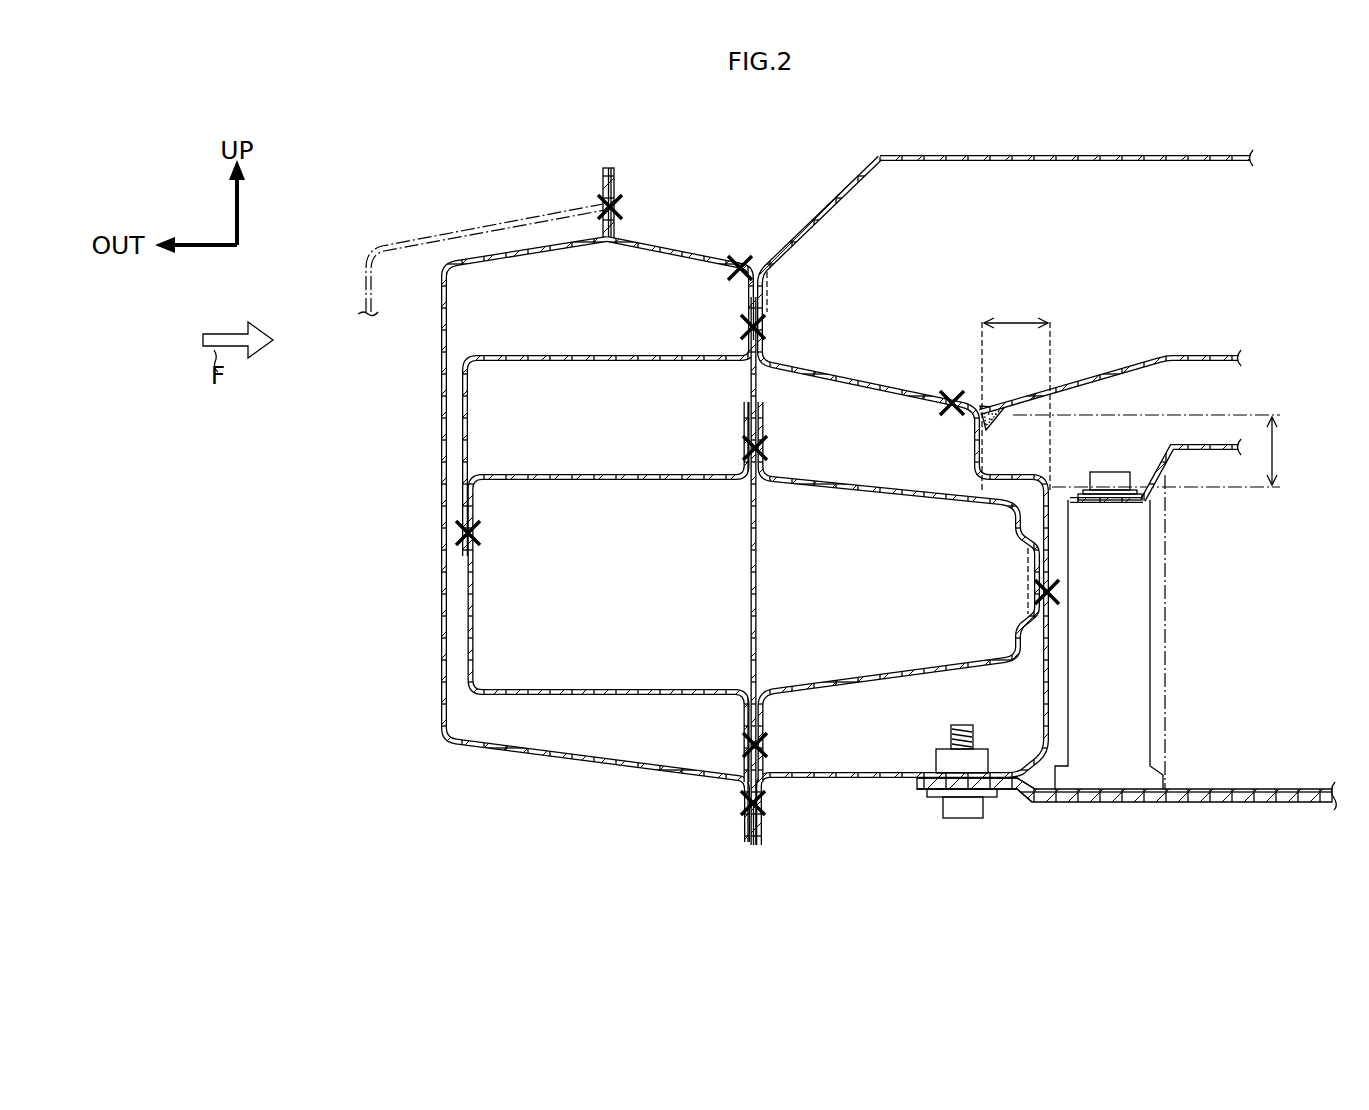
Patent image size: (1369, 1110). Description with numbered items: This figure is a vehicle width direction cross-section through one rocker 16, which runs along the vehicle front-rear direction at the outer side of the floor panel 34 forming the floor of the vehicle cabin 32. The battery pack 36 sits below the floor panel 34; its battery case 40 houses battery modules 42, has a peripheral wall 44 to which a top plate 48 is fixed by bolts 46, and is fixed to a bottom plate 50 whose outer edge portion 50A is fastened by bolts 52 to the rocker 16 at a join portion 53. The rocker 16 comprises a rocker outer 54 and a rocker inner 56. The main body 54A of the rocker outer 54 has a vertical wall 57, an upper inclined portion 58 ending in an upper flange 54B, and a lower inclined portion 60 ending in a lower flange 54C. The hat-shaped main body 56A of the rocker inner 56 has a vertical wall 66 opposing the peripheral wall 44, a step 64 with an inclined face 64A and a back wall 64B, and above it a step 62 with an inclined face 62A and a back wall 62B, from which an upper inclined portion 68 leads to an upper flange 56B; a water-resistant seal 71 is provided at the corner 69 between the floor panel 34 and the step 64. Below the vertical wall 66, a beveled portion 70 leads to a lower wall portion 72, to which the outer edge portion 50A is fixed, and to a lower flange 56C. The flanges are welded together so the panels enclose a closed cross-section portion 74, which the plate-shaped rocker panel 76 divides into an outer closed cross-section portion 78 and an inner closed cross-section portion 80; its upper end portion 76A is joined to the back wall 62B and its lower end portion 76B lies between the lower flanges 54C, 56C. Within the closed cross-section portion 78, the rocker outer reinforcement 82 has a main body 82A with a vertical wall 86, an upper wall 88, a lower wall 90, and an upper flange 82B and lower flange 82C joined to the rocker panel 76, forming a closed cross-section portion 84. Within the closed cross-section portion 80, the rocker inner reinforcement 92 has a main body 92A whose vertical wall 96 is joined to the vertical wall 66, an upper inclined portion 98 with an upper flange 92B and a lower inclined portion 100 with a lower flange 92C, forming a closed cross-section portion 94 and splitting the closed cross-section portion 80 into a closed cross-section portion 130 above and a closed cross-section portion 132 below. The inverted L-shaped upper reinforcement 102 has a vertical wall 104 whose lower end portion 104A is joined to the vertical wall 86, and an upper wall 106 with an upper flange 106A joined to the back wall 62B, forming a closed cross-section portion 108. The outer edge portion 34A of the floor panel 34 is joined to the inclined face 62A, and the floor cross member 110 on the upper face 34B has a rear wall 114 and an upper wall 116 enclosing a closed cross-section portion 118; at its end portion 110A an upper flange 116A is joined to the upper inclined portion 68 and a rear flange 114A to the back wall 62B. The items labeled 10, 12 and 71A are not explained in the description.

The vehicle side section 10 is at (347, 207).
The roof side rail 12 is at (428, 240).
The rocker 16 is at (410, 605).
The vehicle cabin 32 is at (1006, 190).
The floor panel 34 is at (1095, 348).
The vehicle width direction outer edge portion 34A is at (968, 400).
The upper face 34B is at (1225, 356).
The battery pack 36 is at (1109, 823).
The battery case 40 is at (1145, 641).
The battery module 42 is at (1222, 548).
The peripheral wall 44 is at (1100, 770).
The bolt 46 is at (1110, 470).
The top plate 48 is at (1200, 446).
The bottom plate 50 is at (1109, 813).
The outer edge portion 50A is at (925, 792).
The bolt 52 is at (969, 818).
The join portion 53 is at (988, 750).
The rocker outer panel 54 is at (550, 487).
The main body 54A is at (441, 392).
The upper flange 54B is at (603, 198).
The lower flange 54C is at (746, 813).
The rocker inner panel 56 is at (874, 374).
The main body 56A is at (825, 374).
The upper flange 56B is at (614, 195).
The lower flange 56C is at (762, 822).
The vertical wall 57 is at (462, 528).
The upper inclined portion 58 is at (497, 250).
The lower inclined portion 60 is at (578, 758).
The step 62 is at (868, 306).
The inclined face 62A is at (874, 376).
The back wall 62B is at (766, 290).
The step 64 is at (973, 441).
The inclined face 64A is at (983, 478).
The back wall 64B is at (972, 428).
The vertical wall 66 is at (1052, 634).
The upper inclined portion 68 is at (688, 256).
The corner 69 is at (1000, 422).
The beveled portion 70 is at (1048, 760).
The water-resistant seal 71 is at (1011, 368).
The recess bottom 71A is at (1011, 368).
The lower wall portion 72 is at (850, 778).
The closed cross-section portion 74 is at (887, 753).
The rocker panel 76 is at (754, 590).
The upper end portion 76A is at (750, 326).
The lower end portion 76B is at (775, 748).
The closed cross-section portion 78 is at (595, 756).
The closed cross-section portion 80 is at (948, 713).
The rocker outer reinforcement 82 is at (609, 584).
The main body 82A is at (512, 474).
The upper flange 82B is at (744, 438).
The lower flange 82C is at (740, 742).
The closed cross-section portion 84 is at (633, 600).
The vertical wall 86 is at (475, 586).
The upper wall 88 is at (652, 482).
The lower wall 90 is at (604, 690).
The rocker inner reinforcement 92 is at (936, 585).
The main body 92A is at (836, 485).
The upper flange 92B is at (764, 438).
The lower flange 92C is at (777, 708).
The closed cross-section portion 94 is at (988, 582).
The vertical wall 96 is at (1048, 574).
The upper inclined portion 98 is at (873, 490).
The lower inclined portion 100 is at (890, 675).
The upper reinforcement 102 is at (547, 414).
The vertical wall 104 is at (468, 396).
The lower end portion 104A is at (458, 538).
The upper wall 106 is at (616, 362).
The upper flange 106A is at (746, 300).
The closed cross-section portion 108 is at (668, 452).
The floor cross member 110 is at (1165, 156).
The vehicle width direction end portion 110A is at (812, 272).
The rear wall 114 is at (1006, 190).
The rear flange 114A is at (770, 275).
The upper wall 116 is at (905, 157).
The upper flange 116A is at (735, 255).
The closed cross-section portion 118 is at (1085, 252).
The closed cross-section portion 130 is at (884, 390).
The closed cross-section portion 132 is at (1016, 699).